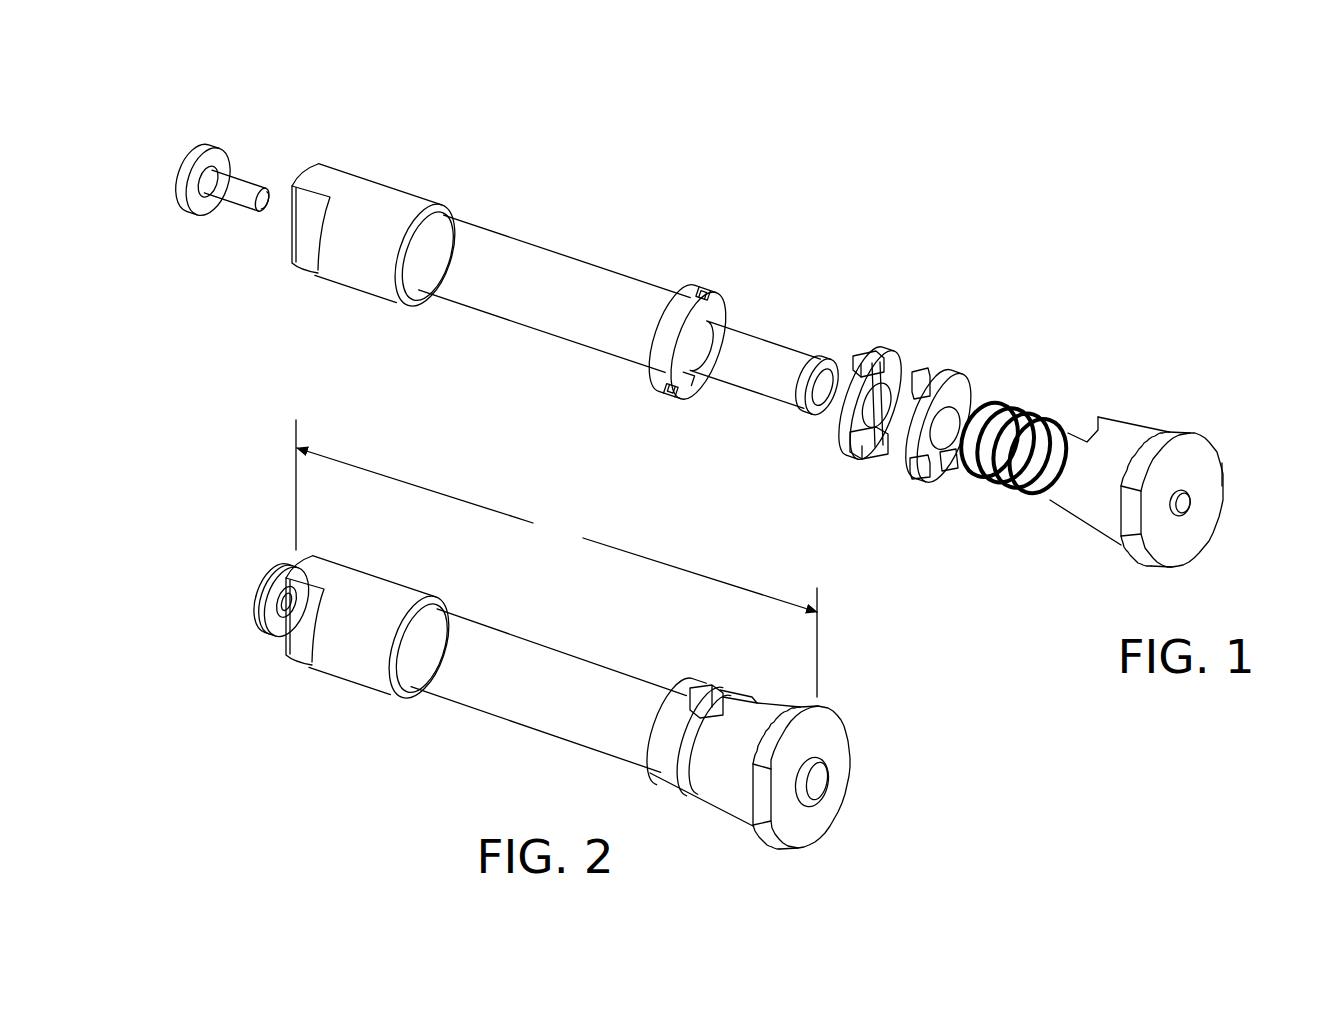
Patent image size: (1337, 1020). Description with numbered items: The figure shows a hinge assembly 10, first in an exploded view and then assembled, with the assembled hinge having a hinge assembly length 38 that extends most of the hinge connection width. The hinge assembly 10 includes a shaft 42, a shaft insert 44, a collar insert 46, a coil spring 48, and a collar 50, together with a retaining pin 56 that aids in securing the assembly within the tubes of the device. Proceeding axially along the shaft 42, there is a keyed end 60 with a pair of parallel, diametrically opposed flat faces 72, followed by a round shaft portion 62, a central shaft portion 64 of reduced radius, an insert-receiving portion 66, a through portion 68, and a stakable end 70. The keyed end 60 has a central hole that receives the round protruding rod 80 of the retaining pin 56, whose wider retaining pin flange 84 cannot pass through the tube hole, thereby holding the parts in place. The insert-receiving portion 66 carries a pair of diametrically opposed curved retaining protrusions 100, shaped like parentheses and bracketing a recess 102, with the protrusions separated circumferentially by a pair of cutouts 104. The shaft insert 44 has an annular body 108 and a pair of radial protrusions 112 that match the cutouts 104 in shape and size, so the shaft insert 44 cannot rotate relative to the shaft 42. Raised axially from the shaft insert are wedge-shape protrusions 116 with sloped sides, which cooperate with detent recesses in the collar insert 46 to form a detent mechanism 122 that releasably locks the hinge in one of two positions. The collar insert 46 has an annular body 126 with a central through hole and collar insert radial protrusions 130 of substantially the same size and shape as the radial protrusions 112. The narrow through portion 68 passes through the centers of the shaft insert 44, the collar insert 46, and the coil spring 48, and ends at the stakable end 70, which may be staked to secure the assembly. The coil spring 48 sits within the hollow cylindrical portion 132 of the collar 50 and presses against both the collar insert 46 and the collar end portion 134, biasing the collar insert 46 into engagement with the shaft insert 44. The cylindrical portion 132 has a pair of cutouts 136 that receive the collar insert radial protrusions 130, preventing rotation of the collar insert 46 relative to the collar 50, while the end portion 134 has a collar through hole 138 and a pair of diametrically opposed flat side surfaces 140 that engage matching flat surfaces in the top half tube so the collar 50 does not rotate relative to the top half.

In FIG. 1, the hinge assembly 10 is at (688, 319).
In FIG. 2, the hinge assembly 10 is at (531, 634).
In FIG. 2, the hinge assembly length 38 is at (556, 558).
In FIG. 1, the shaft 42 is at (542, 285).
In FIG. 2, the shaft 42 is at (463, 734).
In FIG. 1, the shaft insert 44 is at (897, 404).
In FIG. 2, the shaft insert 44 is at (698, 688).
In FIG. 1, the collar insert 46 is at (979, 424).
In FIG. 2, the collar insert 46 is at (726, 698).
In FIG. 1, the coil spring 48 is at (1044, 406).
In FIG. 1, the collar 50 is at (1170, 472).
In FIG. 2, the collar 50 is at (831, 727).
In FIG. 1, the retaining pin 56 is at (171, 190).
In FIG. 2, the retaining pin 56 is at (231, 634).
In FIG. 1, the keyed end 60 is at (345, 219).
In FIG. 1, the round shaft portion 62 is at (402, 198).
In FIG. 1, the central shaft portion 64 is at (498, 245).
In FIG. 1, the insert-receiving portion 66 is at (723, 335).
In FIG. 1, the through portion 68 is at (772, 331).
In FIG. 1, the stakable end 70 is at (826, 356).
In FIG. 2, the stakable end 70 is at (822, 783).
In FIG. 1, the flat faces 72 is at (330, 180).
In FIG. 1, the protruding rod 80 is at (236, 203).
In FIG. 1, the retaining pin flange 84 is at (180, 178).
In FIG. 1, the curved retaining protrusions 100 is at (736, 300).
In FIG. 1, the recess 102 is at (712, 390).
In FIG. 1, the cutouts 104 is at (706, 300).
In FIG. 1, the annular body 108 is at (850, 418).
In FIG. 1, the radial protrusions 112 is at (879, 342).
In FIG. 1, the wedge-shape protrusions 116 is at (890, 352).
In FIG. 1, the detent mechanism 122 is at (940, 404).
In FIG. 1, the annular body 126 is at (922, 466).
In FIG. 1, the collar insert radial protrusions 130 is at (947, 386).
In FIG. 1, the hollow cylindrical portion 132 is at (1082, 507).
In FIG. 1, the end portion 134 is at (1200, 455).
In FIG. 1, the cutouts 136 is at (1082, 418).
In FIG. 1, the collar through hole 138 is at (1186, 512).
In FIG. 1, the flat side surfaces 140 is at (1226, 490).